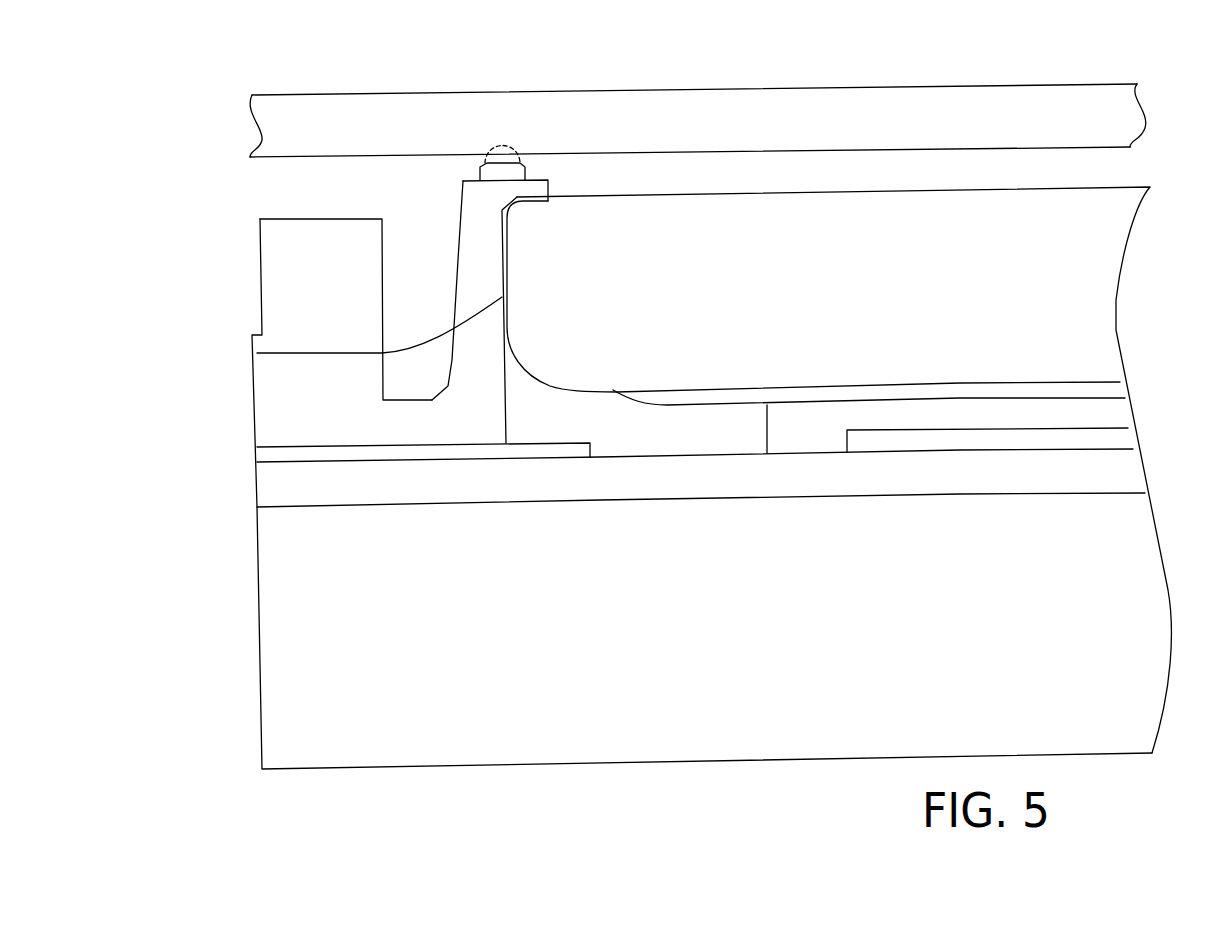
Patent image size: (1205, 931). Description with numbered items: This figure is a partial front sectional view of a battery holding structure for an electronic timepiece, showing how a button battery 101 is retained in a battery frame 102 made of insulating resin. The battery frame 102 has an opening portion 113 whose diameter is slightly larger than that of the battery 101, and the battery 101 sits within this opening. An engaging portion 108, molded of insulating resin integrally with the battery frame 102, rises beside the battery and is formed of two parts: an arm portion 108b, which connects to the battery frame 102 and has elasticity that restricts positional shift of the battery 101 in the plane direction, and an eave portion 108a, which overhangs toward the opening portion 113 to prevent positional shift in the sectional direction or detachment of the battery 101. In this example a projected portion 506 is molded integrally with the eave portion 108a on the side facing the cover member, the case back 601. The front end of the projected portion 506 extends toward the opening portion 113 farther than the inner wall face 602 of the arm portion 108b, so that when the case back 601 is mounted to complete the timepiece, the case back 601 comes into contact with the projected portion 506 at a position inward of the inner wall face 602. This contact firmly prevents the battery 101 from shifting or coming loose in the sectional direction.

The button battery 101 is at (862, 217).
The battery frame 102 is at (807, 435).
The engaging portion 108 is at (464, 253).
The eave portion 108a is at (557, 180).
The arm portion 108b is at (453, 240).
The opening portion 113 is at (257, 353).
The projected portion 506 is at (500, 170).
The case back 601 is at (692, 123).
The inner wall face 602 is at (510, 410).